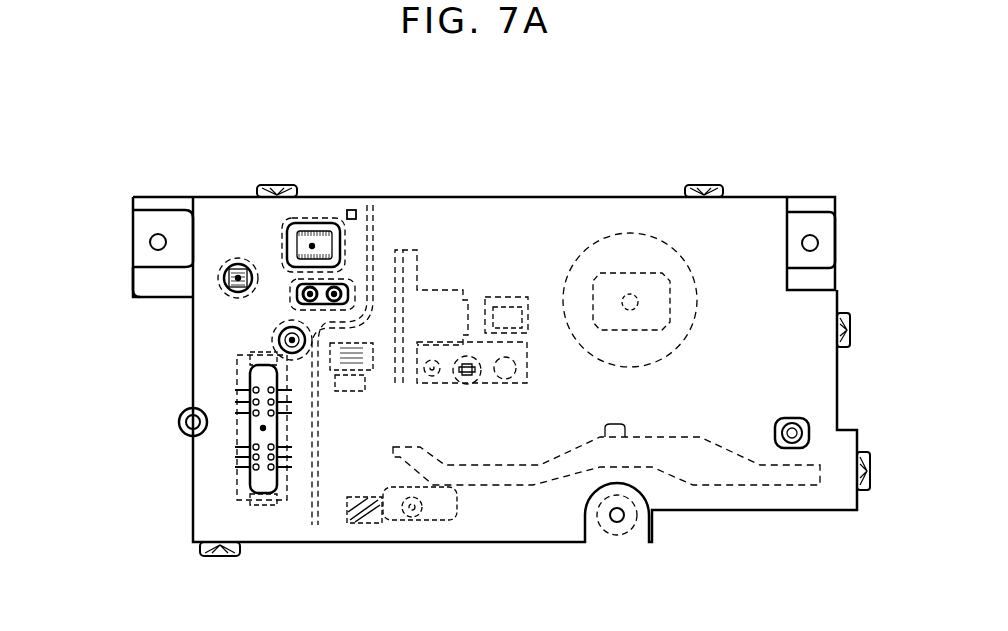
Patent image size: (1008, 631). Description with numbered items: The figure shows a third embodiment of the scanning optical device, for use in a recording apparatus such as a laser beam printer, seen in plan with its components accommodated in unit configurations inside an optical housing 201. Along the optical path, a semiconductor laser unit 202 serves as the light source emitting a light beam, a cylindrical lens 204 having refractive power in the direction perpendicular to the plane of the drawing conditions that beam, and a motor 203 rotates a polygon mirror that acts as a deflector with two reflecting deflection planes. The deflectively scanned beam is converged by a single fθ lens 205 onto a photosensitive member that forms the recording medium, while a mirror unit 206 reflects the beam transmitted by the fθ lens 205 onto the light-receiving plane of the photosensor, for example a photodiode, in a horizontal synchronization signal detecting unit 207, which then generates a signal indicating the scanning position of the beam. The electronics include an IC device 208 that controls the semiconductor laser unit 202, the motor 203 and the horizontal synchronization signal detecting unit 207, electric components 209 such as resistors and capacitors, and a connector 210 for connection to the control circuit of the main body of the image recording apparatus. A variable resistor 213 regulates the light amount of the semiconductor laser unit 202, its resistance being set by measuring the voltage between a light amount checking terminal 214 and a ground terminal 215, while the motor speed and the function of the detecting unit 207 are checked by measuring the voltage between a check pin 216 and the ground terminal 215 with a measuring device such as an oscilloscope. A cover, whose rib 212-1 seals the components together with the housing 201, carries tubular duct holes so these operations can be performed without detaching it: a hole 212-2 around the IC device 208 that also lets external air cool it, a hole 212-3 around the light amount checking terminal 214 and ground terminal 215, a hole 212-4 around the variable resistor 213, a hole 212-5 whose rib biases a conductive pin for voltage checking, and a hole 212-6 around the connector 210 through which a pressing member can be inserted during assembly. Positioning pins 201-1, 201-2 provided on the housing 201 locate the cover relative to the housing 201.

The optical housing 201 is at (735, 192).
The positioning pin 201-1 is at (180, 420).
The positioning pin 201-2 is at (795, 449).
The semiconductor laser unit 202 is at (455, 290).
The motor 203 is at (678, 345).
The cylindrical lens 204 is at (510, 308).
The fθ lens 205 is at (713, 485).
The mirror unit 206 is at (365, 515).
The horizontal synchronization signal detecting unit 207 is at (351, 393).
The IC device 208 is at (309, 245).
The electric components 209 is at (354, 208).
The connector 210 is at (263, 428).
The rib 212-1 is at (368, 333).
The tubular duct hole 212-2 is at (333, 226).
The tubular hole 212-3 is at (342, 285).
The tubular hole 212-4 is at (223, 273).
The tubular duct hole 212-5 is at (278, 338).
The hole 212-6 is at (278, 503).
The variable resistor 213 is at (232, 261).
The light amount checking terminal 214 is at (294, 283).
The ground terminal 215 is at (343, 286).
The check pin 216 is at (273, 343).